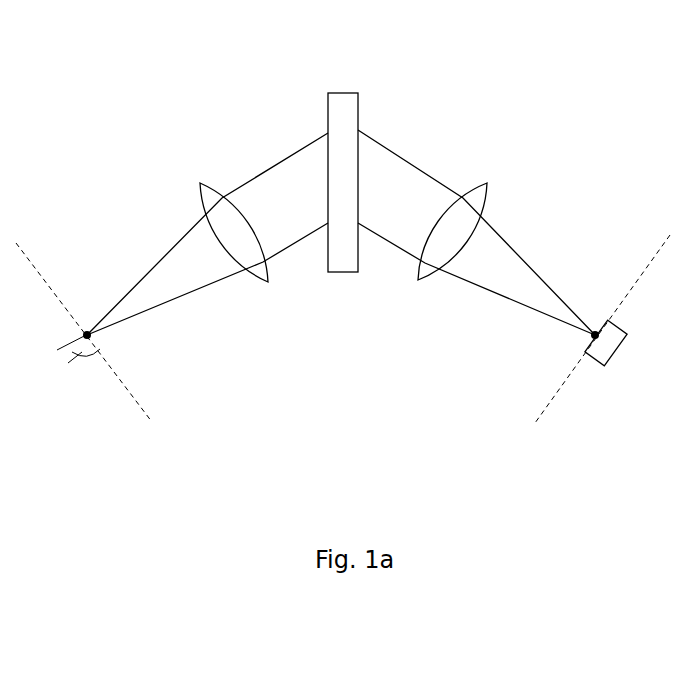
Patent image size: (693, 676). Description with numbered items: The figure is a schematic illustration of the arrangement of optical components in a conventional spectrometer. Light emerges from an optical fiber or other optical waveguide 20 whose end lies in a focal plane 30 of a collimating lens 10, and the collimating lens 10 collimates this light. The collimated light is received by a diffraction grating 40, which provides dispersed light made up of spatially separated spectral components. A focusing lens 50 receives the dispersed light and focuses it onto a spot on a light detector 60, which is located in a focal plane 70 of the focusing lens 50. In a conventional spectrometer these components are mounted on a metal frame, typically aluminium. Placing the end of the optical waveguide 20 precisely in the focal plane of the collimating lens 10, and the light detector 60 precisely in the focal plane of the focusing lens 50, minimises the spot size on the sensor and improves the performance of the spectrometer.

The collimating lens 10 is at (245, 227).
The optical waveguide 20 is at (90, 360).
The focal plane 30 is at (158, 430).
The diffraction grating 40 is at (335, 273).
The focusing lens 50 is at (482, 182).
The light detector 60 is at (617, 327).
The focal plane 70 is at (552, 400).